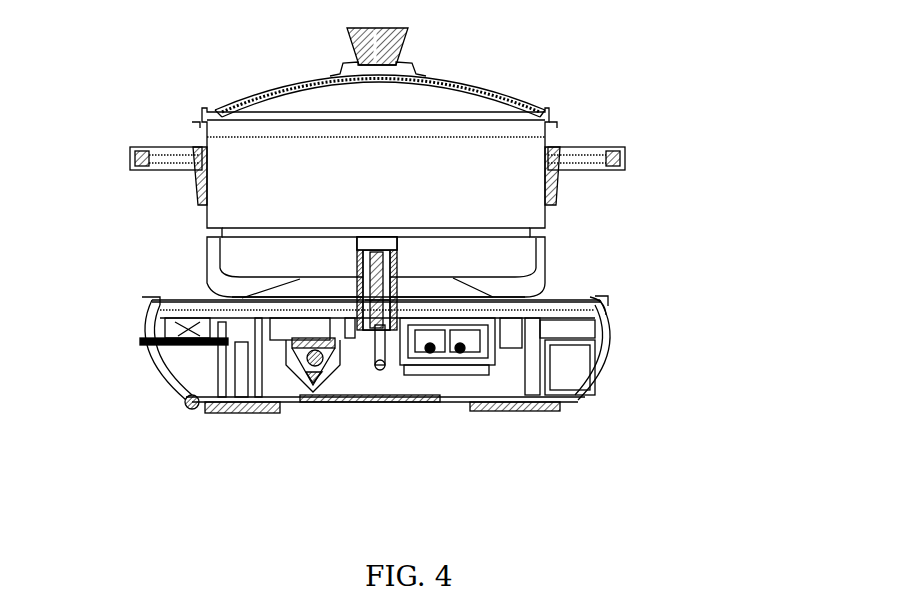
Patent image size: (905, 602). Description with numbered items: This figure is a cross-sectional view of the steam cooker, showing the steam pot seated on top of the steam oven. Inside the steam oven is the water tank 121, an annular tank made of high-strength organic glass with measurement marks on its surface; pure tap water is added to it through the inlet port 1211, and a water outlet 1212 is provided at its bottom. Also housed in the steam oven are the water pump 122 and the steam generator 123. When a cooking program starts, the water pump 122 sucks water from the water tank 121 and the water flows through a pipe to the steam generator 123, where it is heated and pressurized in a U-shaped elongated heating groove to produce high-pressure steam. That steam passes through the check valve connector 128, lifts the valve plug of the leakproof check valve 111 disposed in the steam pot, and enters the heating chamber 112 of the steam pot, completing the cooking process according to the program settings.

The heating chamber 112 is at (477, 247).
The leakproof check valve 111 is at (397, 268).
The check valve connector 128 is at (430, 297).
The inlet port 1211 is at (600, 297).
The water tank 121 is at (150, 373).
The water outlet 1212 is at (183, 407).
The water pump 122 is at (313, 357).
The steam generator 123 is at (453, 357).